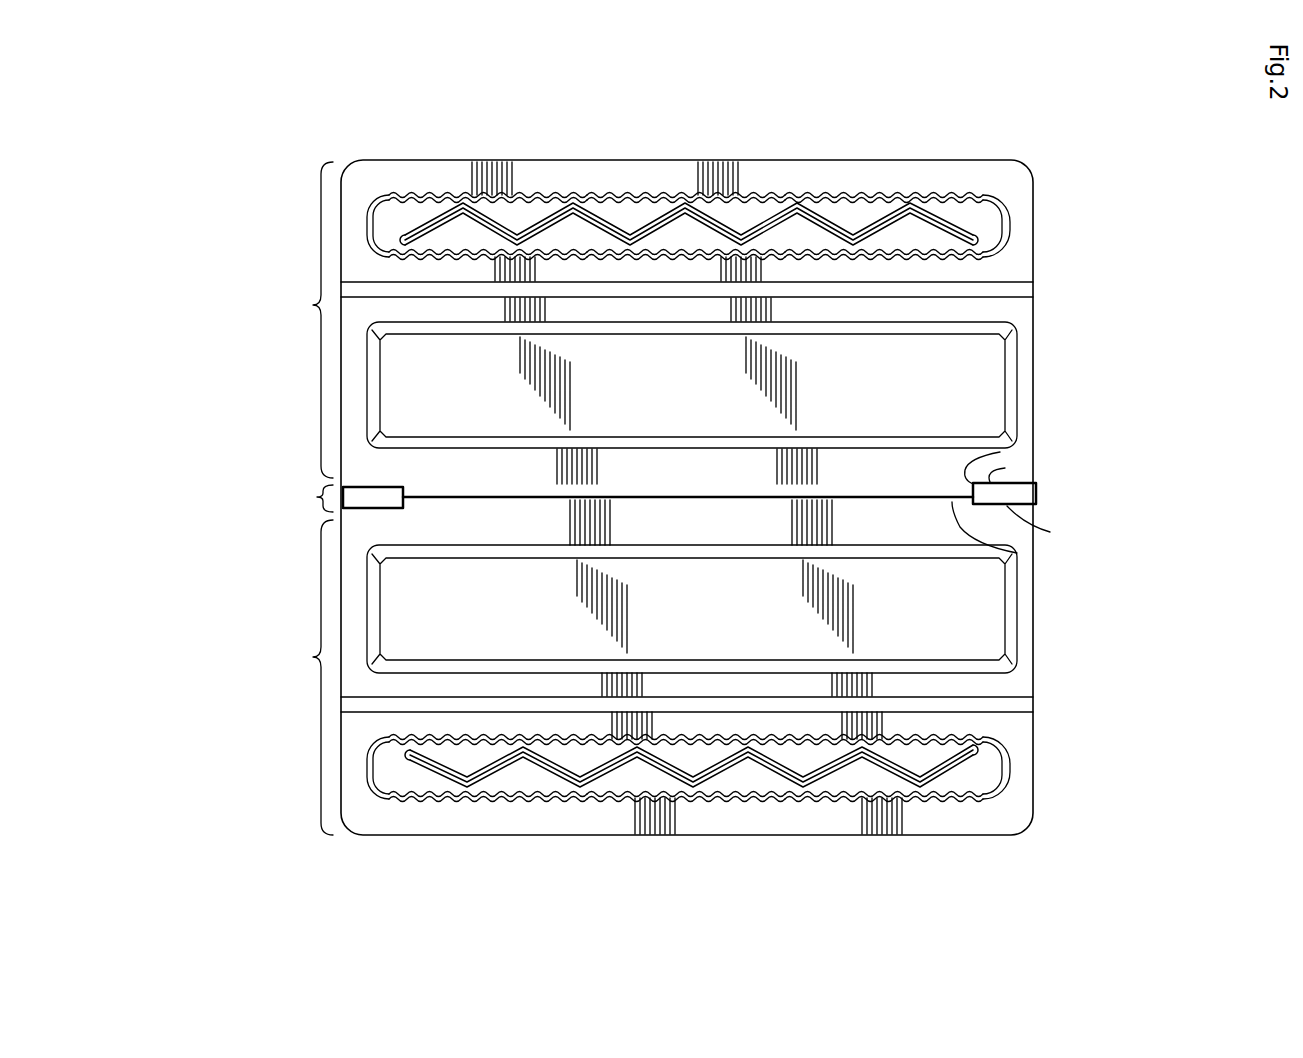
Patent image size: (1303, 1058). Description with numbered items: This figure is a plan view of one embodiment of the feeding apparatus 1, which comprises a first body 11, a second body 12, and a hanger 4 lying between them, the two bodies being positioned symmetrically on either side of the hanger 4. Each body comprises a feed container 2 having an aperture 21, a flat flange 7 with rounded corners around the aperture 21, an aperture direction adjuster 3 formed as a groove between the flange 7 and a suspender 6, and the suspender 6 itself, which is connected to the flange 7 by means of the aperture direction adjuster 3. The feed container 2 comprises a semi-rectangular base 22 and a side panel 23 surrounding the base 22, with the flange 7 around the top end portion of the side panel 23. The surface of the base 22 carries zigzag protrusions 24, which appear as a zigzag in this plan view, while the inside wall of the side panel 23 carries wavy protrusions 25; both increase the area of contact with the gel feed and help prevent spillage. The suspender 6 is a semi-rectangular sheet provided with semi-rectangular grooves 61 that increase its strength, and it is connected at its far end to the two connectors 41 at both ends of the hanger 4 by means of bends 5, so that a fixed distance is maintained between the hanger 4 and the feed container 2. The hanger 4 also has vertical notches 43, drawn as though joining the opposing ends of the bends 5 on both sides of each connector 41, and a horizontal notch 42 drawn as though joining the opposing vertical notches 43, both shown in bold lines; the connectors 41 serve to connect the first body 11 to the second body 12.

The feeding apparatus 1 is at (218, 414).
The feed container 2 is at (1003, 210).
The aperture direction adjuster 3 is at (1022, 289).
The hanger 4 is at (631, 499).
The bends 5 is at (1005, 468).
The suspender 6 is at (1022, 394).
The flange 7 is at (677, 164).
The first body 11 is at (305, 677).
The second body 12 is at (304, 320).
The aperture 21 is at (1003, 237).
The base 22 is at (846, 215).
The side panel 23 is at (934, 206).
The zigzag protrusions 24 is at (555, 212).
The wavy protrusions 25 is at (390, 210).
The connectors 41 is at (1013, 490).
The horizontal notch 42 is at (1017, 553).
The vertical notches 43 is at (1000, 452).
The grooves 61 is at (1010, 352).